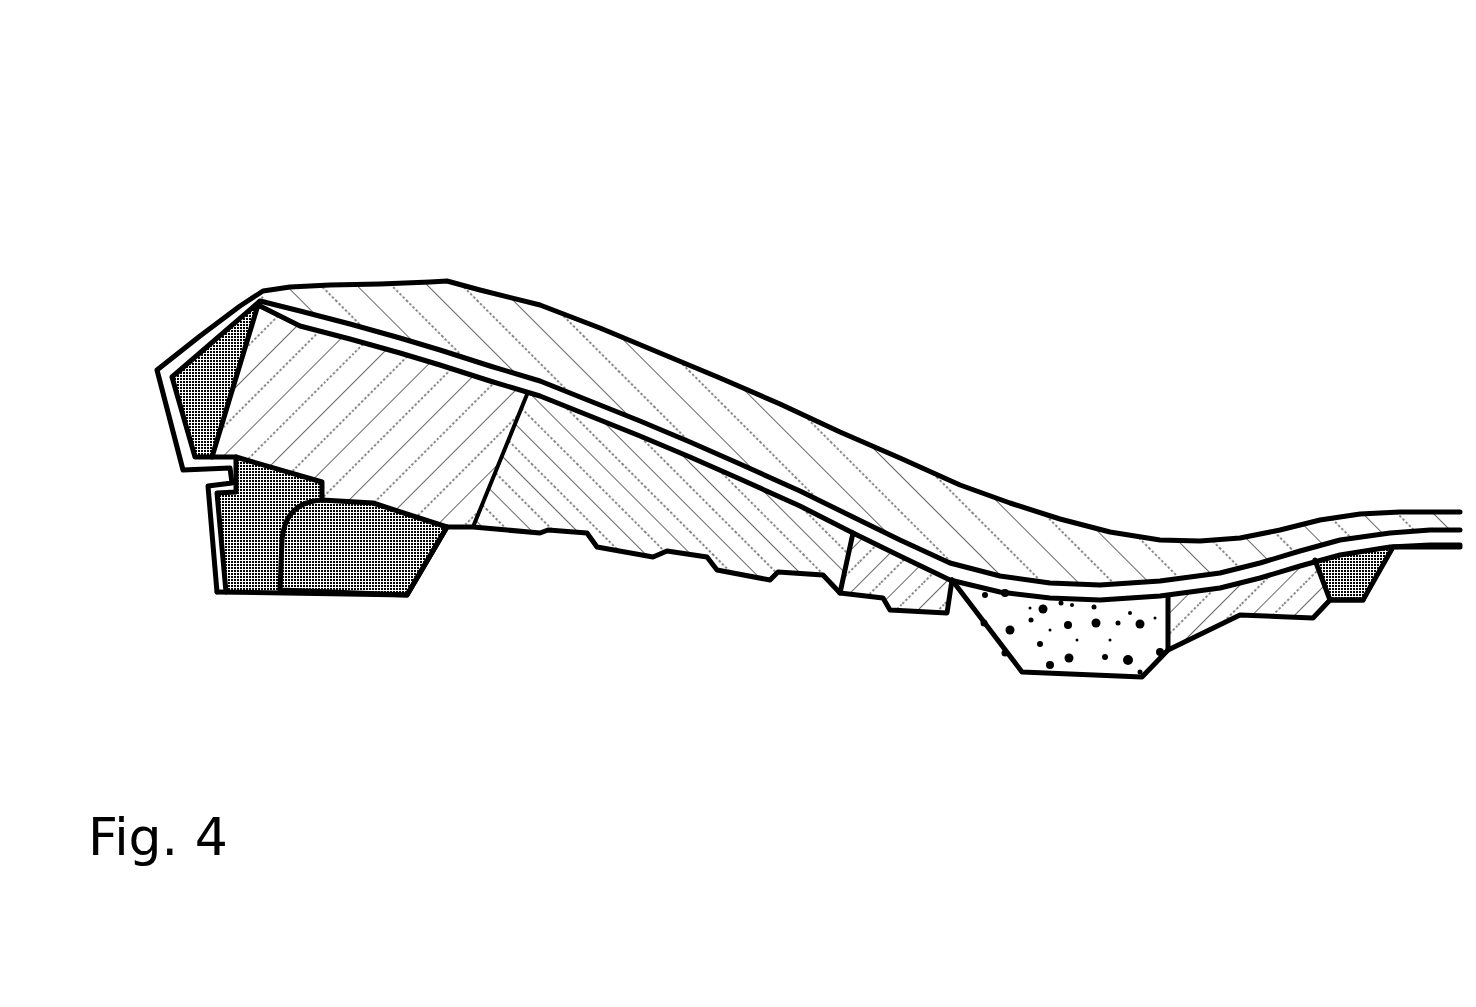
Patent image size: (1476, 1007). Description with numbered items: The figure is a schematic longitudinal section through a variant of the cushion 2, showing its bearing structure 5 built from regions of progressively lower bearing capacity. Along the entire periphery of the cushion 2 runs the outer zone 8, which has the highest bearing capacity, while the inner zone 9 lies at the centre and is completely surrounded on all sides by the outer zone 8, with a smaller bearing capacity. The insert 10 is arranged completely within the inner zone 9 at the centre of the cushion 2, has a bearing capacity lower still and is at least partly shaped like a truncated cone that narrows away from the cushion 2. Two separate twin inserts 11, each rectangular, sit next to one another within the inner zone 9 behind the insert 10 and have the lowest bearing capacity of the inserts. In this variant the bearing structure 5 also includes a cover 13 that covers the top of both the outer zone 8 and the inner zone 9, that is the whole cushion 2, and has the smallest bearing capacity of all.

The cushion 2 is at (759, 218).
The bearing structure 5 is at (1310, 89).
The outer zone 8 is at (203, 387).
The inner zone 9 is at (463, 443).
The insert 10 is at (675, 505).
The twin inserts 11 is at (1070, 622).
The cover 13 is at (853, 495).